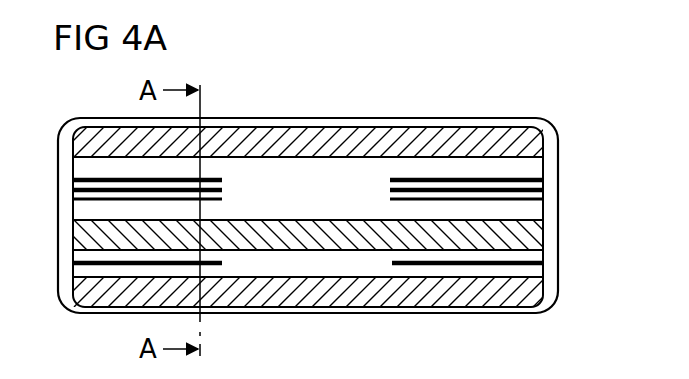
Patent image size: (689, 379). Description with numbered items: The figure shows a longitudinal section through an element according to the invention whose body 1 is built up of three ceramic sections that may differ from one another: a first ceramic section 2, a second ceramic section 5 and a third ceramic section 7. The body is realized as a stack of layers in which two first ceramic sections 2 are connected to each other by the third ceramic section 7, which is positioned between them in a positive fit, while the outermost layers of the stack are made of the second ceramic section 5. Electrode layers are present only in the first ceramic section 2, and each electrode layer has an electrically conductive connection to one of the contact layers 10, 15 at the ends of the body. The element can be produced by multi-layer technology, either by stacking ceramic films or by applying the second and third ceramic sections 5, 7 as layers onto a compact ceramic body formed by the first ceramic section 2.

The body 1 is at (447, 95).
The first ceramic section 2 is at (343, 167).
The second ceramic section 5 is at (278, 128).
The third ceramic section 7 is at (536, 236).
The contact layer 10 is at (549, 252).
The contact layer 15 is at (72, 133).